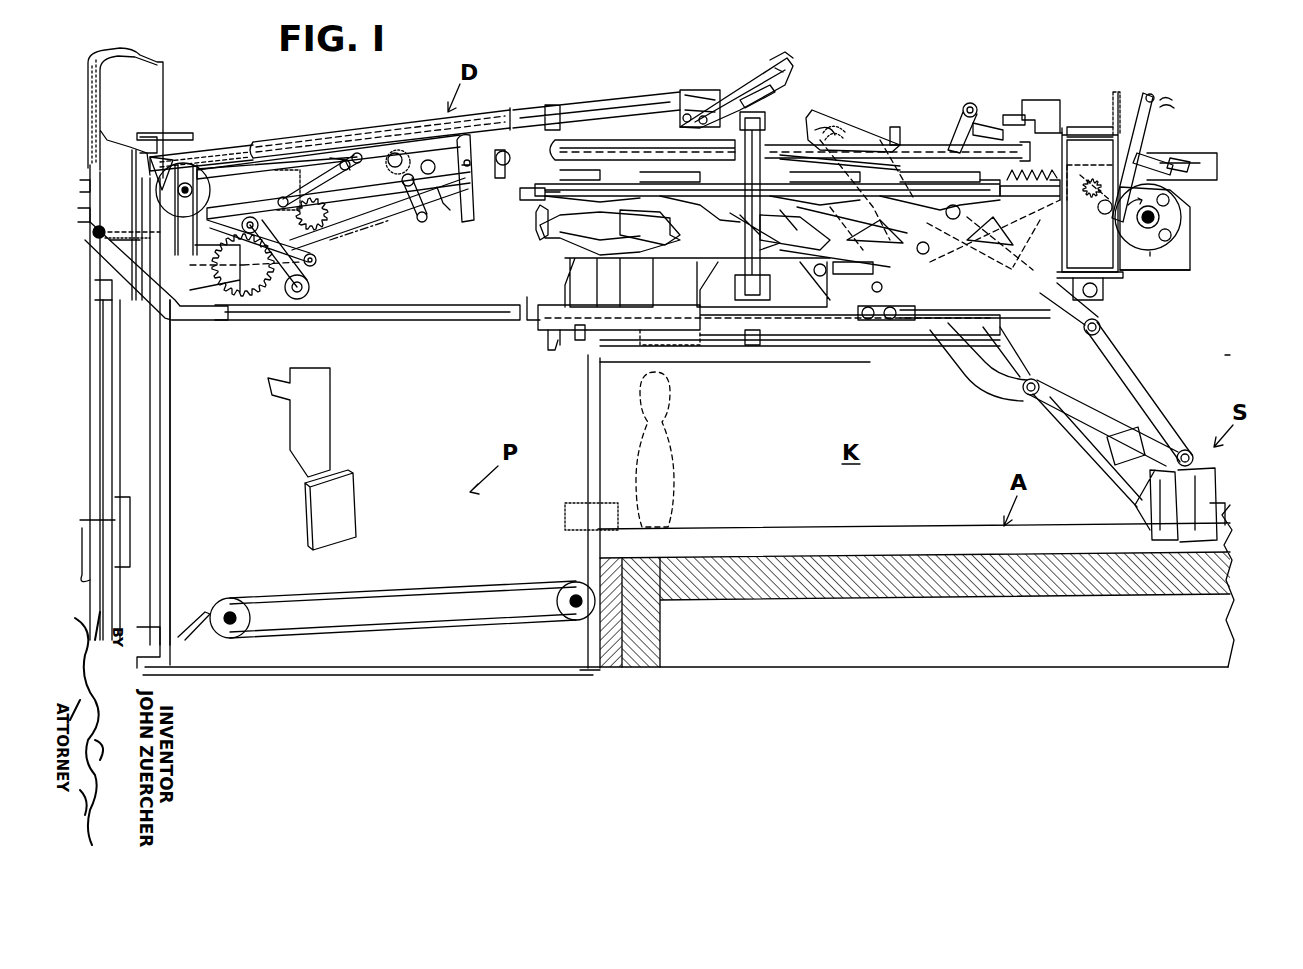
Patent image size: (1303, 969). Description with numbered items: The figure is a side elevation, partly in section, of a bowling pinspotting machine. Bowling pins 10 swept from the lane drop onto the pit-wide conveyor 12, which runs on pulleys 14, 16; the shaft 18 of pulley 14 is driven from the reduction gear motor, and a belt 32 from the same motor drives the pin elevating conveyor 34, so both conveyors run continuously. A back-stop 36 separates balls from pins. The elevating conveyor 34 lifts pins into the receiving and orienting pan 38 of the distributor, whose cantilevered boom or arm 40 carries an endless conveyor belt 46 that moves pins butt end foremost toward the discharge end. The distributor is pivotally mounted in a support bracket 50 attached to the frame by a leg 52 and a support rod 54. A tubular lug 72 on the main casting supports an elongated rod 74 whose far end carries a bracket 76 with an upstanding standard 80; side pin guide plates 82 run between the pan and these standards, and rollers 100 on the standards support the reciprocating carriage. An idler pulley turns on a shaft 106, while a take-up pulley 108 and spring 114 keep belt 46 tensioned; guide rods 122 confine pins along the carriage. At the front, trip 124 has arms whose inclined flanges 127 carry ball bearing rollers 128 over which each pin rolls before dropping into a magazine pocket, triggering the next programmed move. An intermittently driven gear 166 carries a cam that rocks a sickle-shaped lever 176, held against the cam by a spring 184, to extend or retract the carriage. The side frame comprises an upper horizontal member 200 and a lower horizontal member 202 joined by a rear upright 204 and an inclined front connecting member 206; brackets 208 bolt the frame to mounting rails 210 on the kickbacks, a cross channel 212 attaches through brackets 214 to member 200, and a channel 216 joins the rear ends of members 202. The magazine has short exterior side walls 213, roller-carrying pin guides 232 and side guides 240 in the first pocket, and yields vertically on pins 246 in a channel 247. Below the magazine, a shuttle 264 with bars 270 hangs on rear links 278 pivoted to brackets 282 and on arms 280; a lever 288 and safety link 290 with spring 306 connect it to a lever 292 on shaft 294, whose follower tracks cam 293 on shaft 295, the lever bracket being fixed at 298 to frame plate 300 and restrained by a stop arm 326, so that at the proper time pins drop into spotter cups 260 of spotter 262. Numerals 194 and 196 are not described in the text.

The bowling pins 10 is at (678, 448).
The conveyor 12 is at (340, 597).
The pulley 14 is at (250, 619).
The pulley 16 is at (563, 603).
The shaft 18 is at (233, 618).
The belt 32 is at (160, 62).
The pin elevating conveyor 34 is at (142, 418).
The back-stop 36 is at (345, 500).
The receiving and orienting member or pan 38 is at (175, 136).
The boom or arm 40 is at (496, 113).
The endless conveyor belt 46 is at (322, 138).
The support bracket 50 is at (210, 320).
The leg 52 is at (100, 236).
The support rod 54 is at (386, 316).
The tubular lug 72 is at (258, 252).
The elongated rod 74 is at (379, 214).
The bracket 76 is at (444, 205).
The upstanding standard 80 is at (471, 186).
The side pin guide plates 82 is at (370, 140).
The rollers 100 is at (508, 163).
The shaft 106 is at (348, 167).
The take-up pulley 108 is at (348, 180).
The spring 114 is at (443, 188).
The guide rods 122 is at (697, 95).
The trip 124 is at (733, 57).
The flange 127 is at (756, 102).
The ball bearing rollers 128 is at (783, 68).
The intermittently driven gear 166 is at (316, 263).
The sickle-shaped lever 176 is at (312, 282).
The spring 184 is at (340, 246).
The pivot pin 194 is at (96, 230).
The link 196 is at (112, 240).
The upper horizontal member 200 is at (1217, 165).
The lower horizontal member 202 is at (790, 340).
The rear upright 204 is at (648, 290).
The inclined front connecting member 206 is at (1064, 256).
The brackets 208 is at (680, 342).
The mounting rails 210 is at (745, 360).
The cross channel 212 is at (1114, 95).
The exterior side walls 213 is at (548, 112).
The brackets 214 is at (1108, 134).
The channel 216 is at (553, 345).
The pin guides 232 is at (841, 118).
The side guides 240 is at (898, 126).
The pins 246 is at (1025, 116).
The channel 247 is at (1033, 100).
The spotter cups 260 is at (562, 224).
The spotter 262 is at (705, 268).
The shuttle 264 is at (1028, 194).
The elongated rods or bars 270 is at (976, 100).
The rear links 278 is at (540, 218).
The arms 280 is at (986, 136).
The brackets 282 is at (538, 206).
The lever 288 is at (952, 132).
The link 290 is at (1068, 163).
The lever 292 is at (1140, 122).
The cam 293 is at (1150, 256).
The shaft 294 is at (1154, 96).
The shaft 295 is at (1182, 216).
The fixing point 298 is at (1190, 250).
The frame plate 300 is at (1175, 266).
The spring 306 is at (1040, 168).
The stop arm 326 is at (1178, 163).